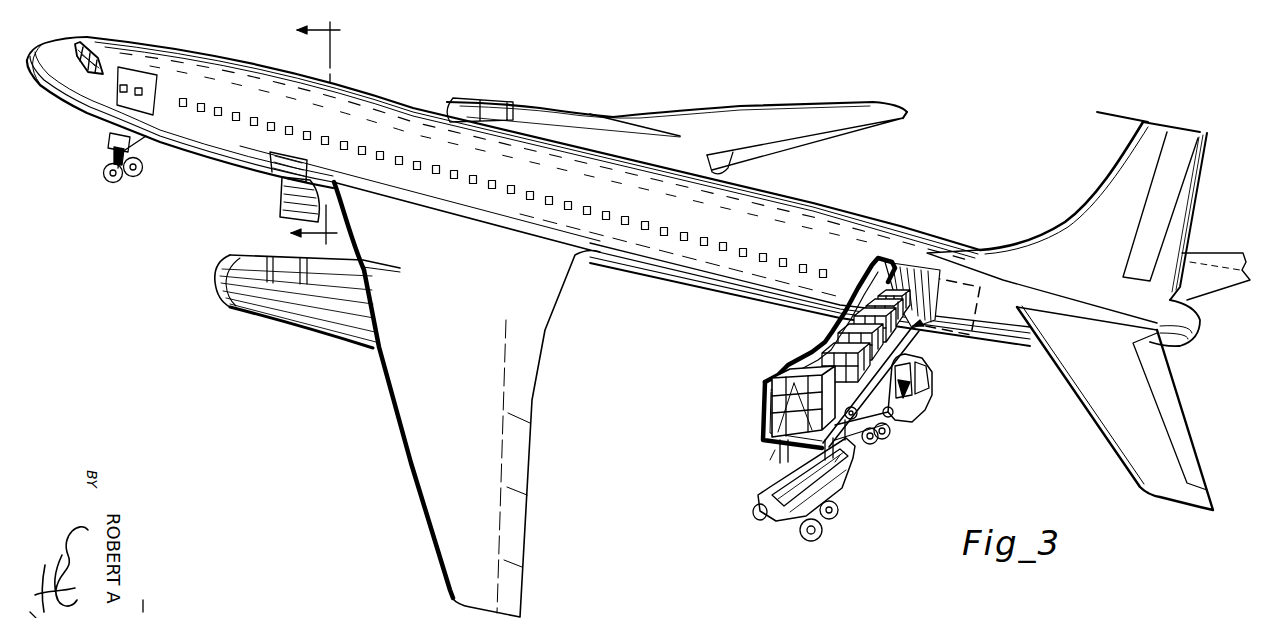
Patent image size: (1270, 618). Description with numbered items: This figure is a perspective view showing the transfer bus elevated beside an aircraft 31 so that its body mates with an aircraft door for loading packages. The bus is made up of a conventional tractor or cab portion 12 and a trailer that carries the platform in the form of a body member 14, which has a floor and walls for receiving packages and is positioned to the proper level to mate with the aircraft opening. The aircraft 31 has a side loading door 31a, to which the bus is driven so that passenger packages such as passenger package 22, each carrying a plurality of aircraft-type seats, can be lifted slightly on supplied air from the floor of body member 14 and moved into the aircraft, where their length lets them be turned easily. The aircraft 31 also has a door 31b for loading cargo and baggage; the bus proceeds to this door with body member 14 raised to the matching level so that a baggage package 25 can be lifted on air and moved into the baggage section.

The aircraft 31 is at (554, 183).
The side loading door 31a is at (952, 325).
The door 31b is at (286, 198).
The passenger package 22 is at (822, 342).
The baggage package 25 is at (771, 396).
The body member 14 is at (848, 404).
The cab portion 12 is at (915, 396).